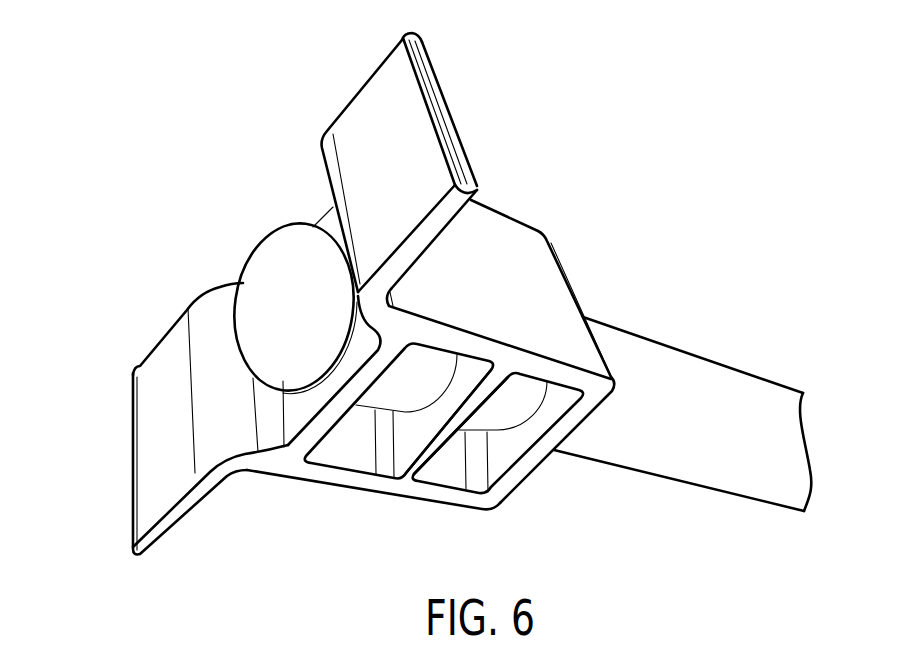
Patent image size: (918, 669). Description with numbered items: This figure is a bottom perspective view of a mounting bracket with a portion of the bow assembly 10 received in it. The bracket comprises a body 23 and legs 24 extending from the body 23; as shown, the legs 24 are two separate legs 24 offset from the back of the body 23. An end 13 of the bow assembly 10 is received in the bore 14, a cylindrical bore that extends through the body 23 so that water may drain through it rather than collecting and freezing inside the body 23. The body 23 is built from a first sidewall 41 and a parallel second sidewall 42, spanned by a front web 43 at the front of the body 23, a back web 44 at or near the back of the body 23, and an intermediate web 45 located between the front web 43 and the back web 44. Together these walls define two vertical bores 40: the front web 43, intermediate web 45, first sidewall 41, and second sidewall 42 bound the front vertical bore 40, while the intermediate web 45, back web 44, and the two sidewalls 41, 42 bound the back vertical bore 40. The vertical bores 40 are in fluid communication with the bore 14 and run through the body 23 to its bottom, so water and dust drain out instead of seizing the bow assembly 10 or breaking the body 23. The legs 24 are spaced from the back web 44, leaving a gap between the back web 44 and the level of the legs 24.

The bow assembly 10 is at (733, 392).
The end 13 is at (263, 258).
The bore 14 is at (273, 390).
The body 23 is at (493, 233).
The leg 24 is at (360, 108).
The vertical bore 40 is at (367, 443).
The first sidewall 41 is at (332, 477).
The second sidewall 42 is at (522, 363).
The front web 43 is at (547, 413).
The back web 44 is at (305, 410).
The intermediate web 45 is at (435, 417).